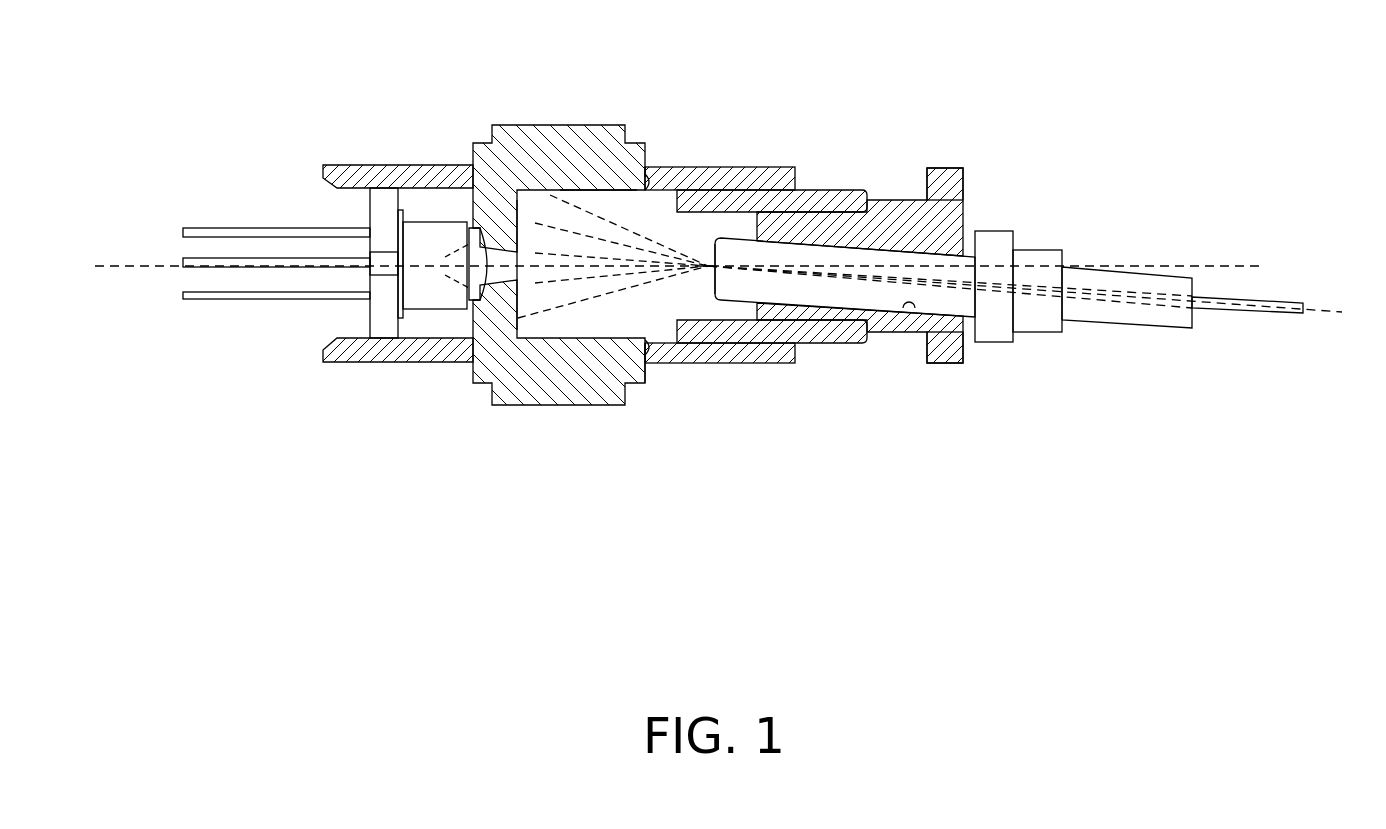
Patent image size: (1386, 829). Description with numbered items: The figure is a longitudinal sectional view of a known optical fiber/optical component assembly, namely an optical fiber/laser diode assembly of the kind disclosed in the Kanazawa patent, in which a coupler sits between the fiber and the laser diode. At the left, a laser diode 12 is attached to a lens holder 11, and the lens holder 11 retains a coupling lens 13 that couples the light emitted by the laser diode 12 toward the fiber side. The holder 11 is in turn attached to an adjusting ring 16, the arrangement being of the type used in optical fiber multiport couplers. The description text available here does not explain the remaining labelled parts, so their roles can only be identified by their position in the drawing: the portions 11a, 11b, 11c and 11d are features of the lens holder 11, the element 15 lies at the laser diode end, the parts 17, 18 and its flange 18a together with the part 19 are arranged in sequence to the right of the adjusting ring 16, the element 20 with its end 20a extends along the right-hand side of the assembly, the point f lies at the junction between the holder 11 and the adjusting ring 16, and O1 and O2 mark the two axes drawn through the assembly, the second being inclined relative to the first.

The lens holder 11 is at (503, 150).
The lens holder front portion 11a is at (472, 364).
The lens holder rear end face 11b is at (650, 357).
The lens holder inner wall 11c is at (620, 203).
The lens holder aperture wall 11d is at (522, 255).
The laser diode 12 is at (362, 163).
The coupling lens 13 is at (465, 298).
The stem 15 is at (418, 292).
The adjusting ring 16 is at (755, 177).
The sleeve 17 is at (820, 195).
The ferrule holder 18 is at (893, 215).
The ferrule holder flange 18a is at (908, 330).
The ferrule receptacle 19 is at (1045, 262).
The optical fiber ferrule 20 is at (1030, 283).
The ferrule end face 20a is at (717, 276).
The optical axis of lens O1 is at (1102, 268).
The optical axis of fiber O2 is at (1123, 298).
The weld point f is at (648, 185).